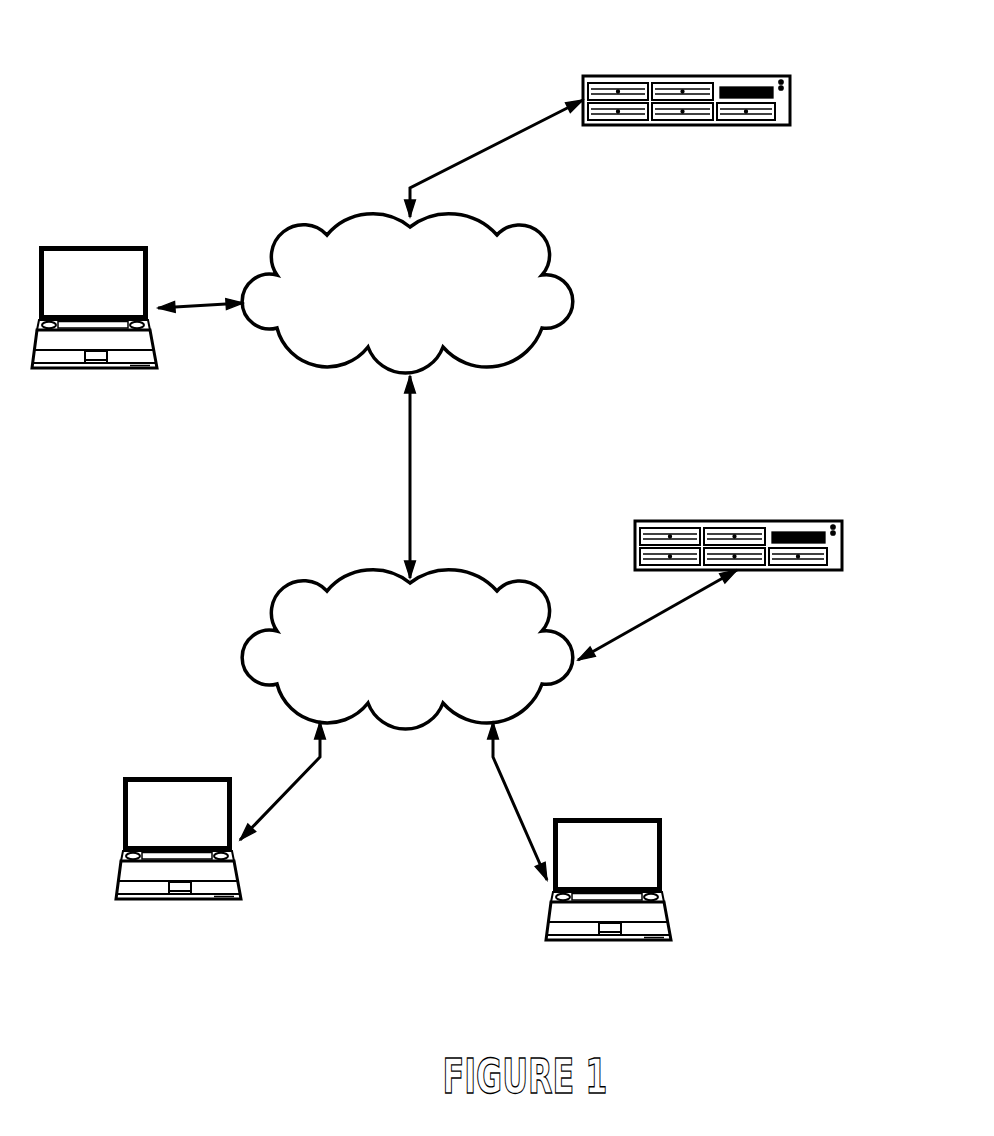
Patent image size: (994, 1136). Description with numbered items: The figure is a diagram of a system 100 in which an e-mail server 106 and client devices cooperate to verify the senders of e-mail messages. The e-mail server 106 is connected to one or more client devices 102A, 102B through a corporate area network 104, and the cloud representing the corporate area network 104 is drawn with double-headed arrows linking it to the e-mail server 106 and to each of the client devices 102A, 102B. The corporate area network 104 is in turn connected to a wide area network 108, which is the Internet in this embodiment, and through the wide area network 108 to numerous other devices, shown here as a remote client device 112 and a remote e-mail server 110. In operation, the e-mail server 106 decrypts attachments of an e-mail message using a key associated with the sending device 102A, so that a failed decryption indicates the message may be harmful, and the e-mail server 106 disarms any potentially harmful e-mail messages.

The network system 100 is at (203, 178).
The sending device 102A is at (178, 777).
The client device 102B is at (608, 818).
The corporate area network 104 is at (407, 649).
The e-mail server 106 is at (740, 521).
The wide area network 108 is at (407, 293).
The e-mail server 110 is at (687, 76).
The client device 112 is at (95, 246).